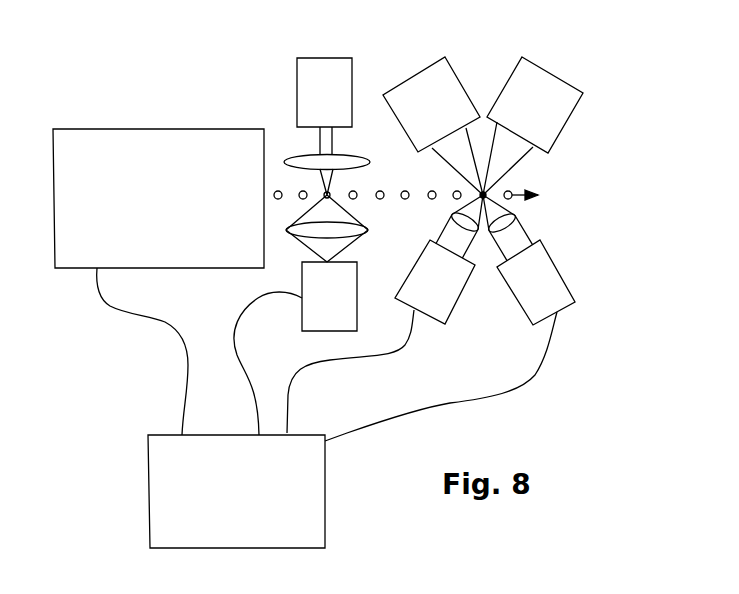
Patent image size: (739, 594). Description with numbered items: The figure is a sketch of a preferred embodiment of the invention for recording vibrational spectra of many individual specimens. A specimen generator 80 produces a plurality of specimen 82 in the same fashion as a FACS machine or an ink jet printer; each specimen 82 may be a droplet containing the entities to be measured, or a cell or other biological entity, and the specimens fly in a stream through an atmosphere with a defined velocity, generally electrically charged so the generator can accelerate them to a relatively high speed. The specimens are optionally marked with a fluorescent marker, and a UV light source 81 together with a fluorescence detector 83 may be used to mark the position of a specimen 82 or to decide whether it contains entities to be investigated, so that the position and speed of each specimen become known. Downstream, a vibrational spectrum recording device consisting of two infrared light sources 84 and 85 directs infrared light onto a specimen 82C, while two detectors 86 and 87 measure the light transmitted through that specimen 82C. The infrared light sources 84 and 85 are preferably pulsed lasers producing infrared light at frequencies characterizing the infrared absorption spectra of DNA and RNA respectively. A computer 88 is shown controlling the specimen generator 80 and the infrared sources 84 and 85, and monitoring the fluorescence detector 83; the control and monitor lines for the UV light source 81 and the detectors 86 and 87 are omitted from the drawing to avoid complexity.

The specimen generator 80 is at (211, 127).
The UV light source 81 is at (297, 88).
The specimen 82 is at (331, 196).
The specimen 82C is at (351, 228).
The fluorescence detector 83 is at (321, 332).
The infrared light source 84 is at (447, 325).
The infrared light source 85 is at (567, 305).
The detector 86 is at (562, 135).
The detector 87 is at (422, 67).
The computer 88 is at (326, 497).